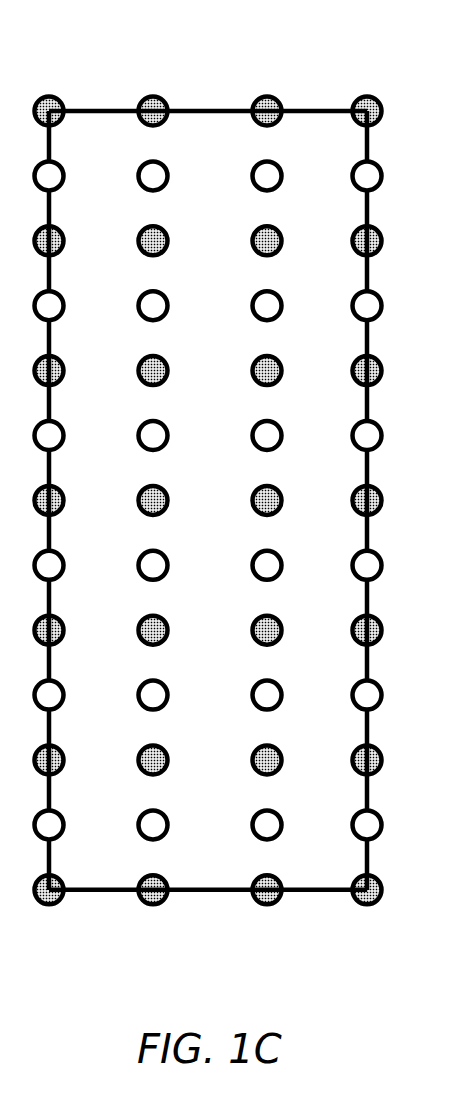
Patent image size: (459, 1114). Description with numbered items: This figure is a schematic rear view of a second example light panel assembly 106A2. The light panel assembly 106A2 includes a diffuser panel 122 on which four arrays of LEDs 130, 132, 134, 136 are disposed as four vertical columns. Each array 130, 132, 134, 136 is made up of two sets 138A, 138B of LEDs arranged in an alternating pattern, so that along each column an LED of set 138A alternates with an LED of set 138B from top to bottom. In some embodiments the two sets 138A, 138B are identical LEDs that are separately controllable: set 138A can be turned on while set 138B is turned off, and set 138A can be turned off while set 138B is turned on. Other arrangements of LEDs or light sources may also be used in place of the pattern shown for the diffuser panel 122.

The light panel assembly 106A2 is at (207, 98).
The diffuser panel 122 is at (210, 896).
The array of LEDs 130 is at (76, 913).
The array of LEDs 132 is at (180, 913).
The array of LEDs 134 is at (292, 912).
The fourth column of magnets 136 is at (388, 912).
The set of LEDs 138A is at (261, 253).
The set of LEDs 138B is at (258, 450).